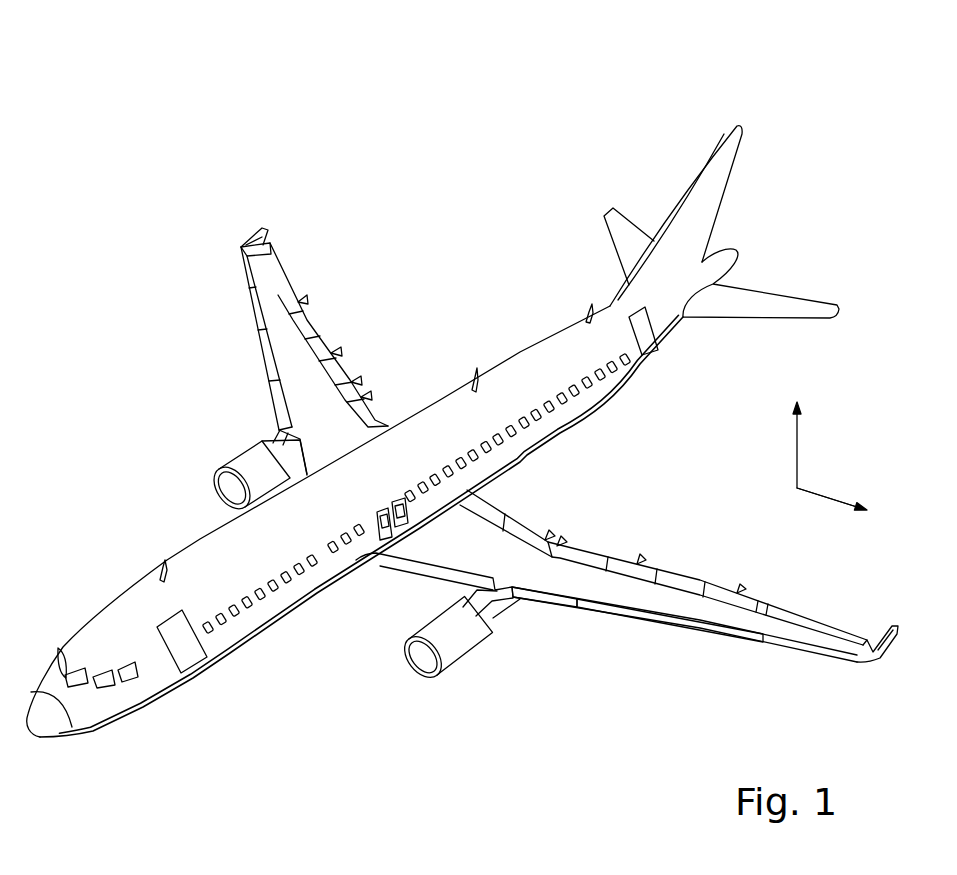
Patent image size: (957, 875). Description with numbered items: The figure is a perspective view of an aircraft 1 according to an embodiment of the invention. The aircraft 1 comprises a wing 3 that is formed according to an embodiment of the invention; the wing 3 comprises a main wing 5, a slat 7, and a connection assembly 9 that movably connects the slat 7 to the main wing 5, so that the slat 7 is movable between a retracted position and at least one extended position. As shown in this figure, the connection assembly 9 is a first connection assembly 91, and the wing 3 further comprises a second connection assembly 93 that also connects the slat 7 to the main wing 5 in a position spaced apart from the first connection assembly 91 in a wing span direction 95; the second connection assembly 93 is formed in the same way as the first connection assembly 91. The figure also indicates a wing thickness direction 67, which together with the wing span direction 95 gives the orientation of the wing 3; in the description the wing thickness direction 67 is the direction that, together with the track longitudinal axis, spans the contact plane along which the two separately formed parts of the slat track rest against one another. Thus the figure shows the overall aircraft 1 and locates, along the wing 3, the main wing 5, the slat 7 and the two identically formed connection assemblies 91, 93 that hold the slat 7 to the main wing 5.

The aircraft 1 is at (227, 121).
The wing 3 is at (342, 283).
The main wing 5 is at (577, 583).
The slat 7 is at (623, 616).
The connection assembly 9 is at (606, 604).
The first connection assembly 91 is at (572, 612).
The second connection assembly 93 is at (668, 628).
The wing thickness direction 67 is at (802, 437).
The wing span direction 95 is at (825, 497).